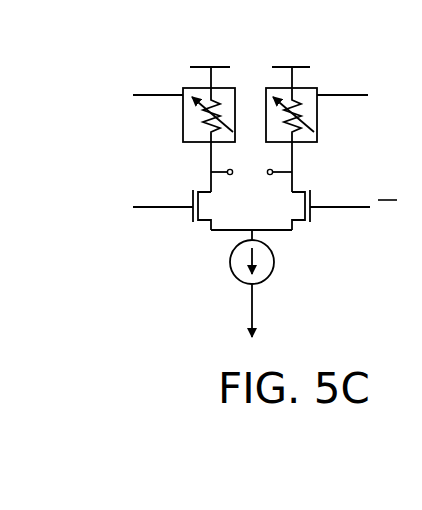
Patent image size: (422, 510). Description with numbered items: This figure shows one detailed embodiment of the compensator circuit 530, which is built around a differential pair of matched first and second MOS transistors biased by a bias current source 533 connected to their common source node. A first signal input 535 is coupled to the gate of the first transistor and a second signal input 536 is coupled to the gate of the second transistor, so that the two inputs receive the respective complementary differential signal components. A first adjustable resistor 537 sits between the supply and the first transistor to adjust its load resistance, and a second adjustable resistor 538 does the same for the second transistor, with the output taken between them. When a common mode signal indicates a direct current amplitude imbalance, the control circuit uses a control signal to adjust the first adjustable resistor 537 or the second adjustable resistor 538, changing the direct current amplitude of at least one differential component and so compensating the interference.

The compensator circuit 530 is at (330, 263).
The bias current source 533 is at (238, 277).
The first signal input 535 is at (179, 210).
The second signal input 536 is at (321, 210).
The first adjustable resistor 537 is at (195, 115).
The second adjustable resistor 538 is at (308, 115).